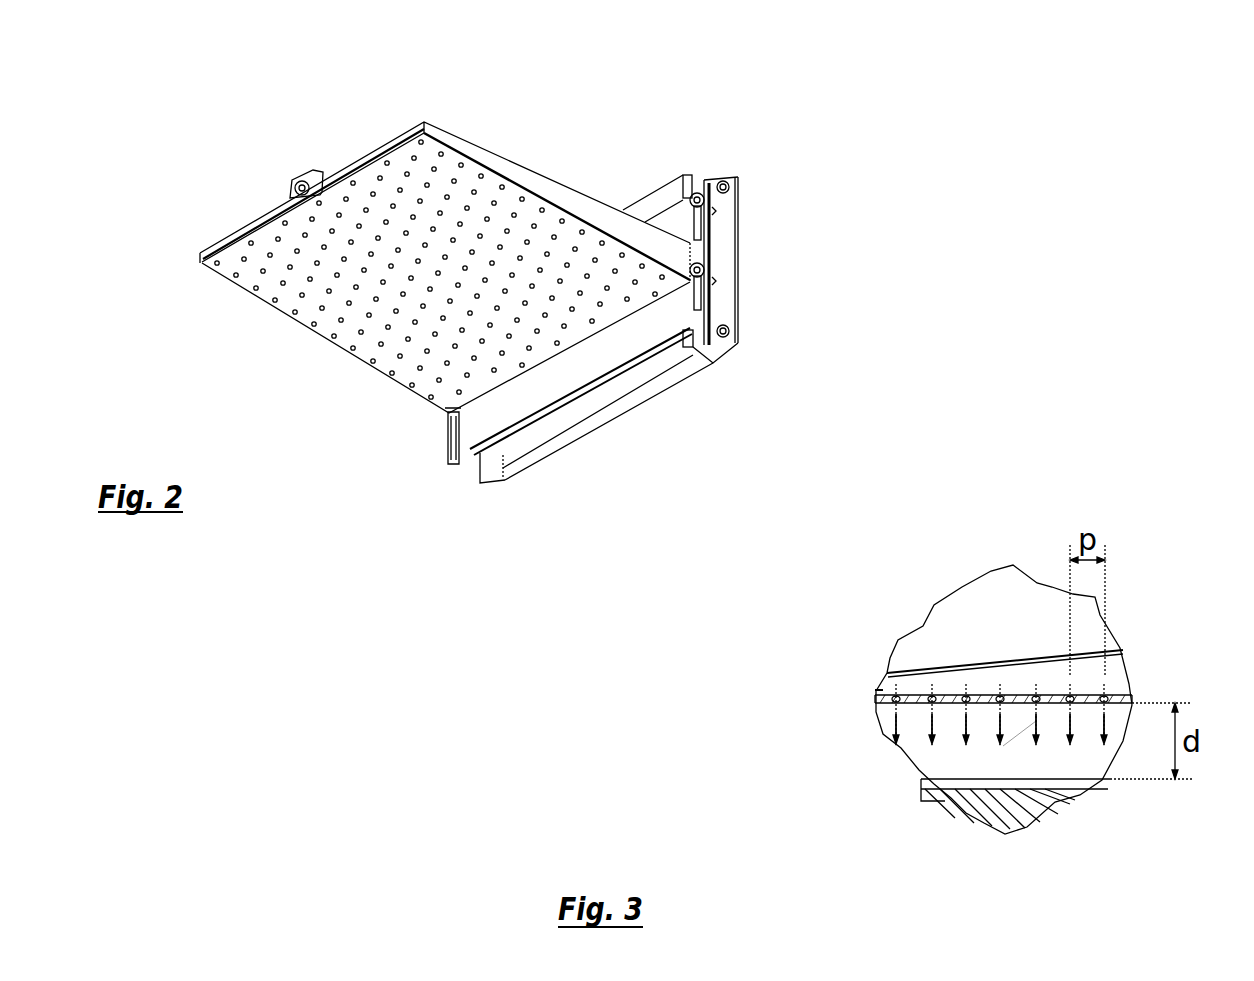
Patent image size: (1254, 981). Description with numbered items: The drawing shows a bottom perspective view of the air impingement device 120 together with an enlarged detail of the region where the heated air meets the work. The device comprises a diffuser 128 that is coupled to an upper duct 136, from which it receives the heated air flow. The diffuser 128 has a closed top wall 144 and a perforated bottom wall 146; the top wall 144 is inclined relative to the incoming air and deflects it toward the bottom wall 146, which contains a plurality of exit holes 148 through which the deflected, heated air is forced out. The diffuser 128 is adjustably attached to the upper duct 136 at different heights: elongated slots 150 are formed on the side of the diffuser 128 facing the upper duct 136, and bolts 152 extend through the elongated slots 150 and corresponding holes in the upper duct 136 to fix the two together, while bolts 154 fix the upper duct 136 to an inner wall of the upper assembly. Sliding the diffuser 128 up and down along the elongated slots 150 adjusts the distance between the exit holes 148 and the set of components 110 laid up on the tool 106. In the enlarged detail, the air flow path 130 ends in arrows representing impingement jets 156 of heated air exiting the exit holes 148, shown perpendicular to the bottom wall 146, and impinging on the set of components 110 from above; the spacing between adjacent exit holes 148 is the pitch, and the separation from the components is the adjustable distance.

In FIG. 2, the air impingement device 120 is at (187, 119).
In FIG. 2, the diffuser 128 is at (422, 124).
In FIG. 2, the exit holes 148 is at (476, 251).
In FIG. 3, the exit holes 148 is at (1102, 698).
In FIG. 2, the bolts 152 is at (691, 193).
In FIG. 2, the bolts 154 is at (740, 200).
In FIG. 2, the elongated slots 150 is at (712, 298).
In FIG. 2, the upper duct 136 is at (670, 370).
In FIG. 2, the perforated bottom wall 146 is at (455, 394).
In FIG. 3, the perforated bottom wall 146 is at (952, 700).
In FIG. 3, the closed top wall 144 is at (1003, 660).
In FIG. 3, the set of components 110 is at (951, 777).
In FIG. 3, the tool 106 is at (984, 814).
In FIG. 3, the air flow path 130 is at (1034, 719).
In FIG. 3, the impingement jets 156 is at (1003, 746).